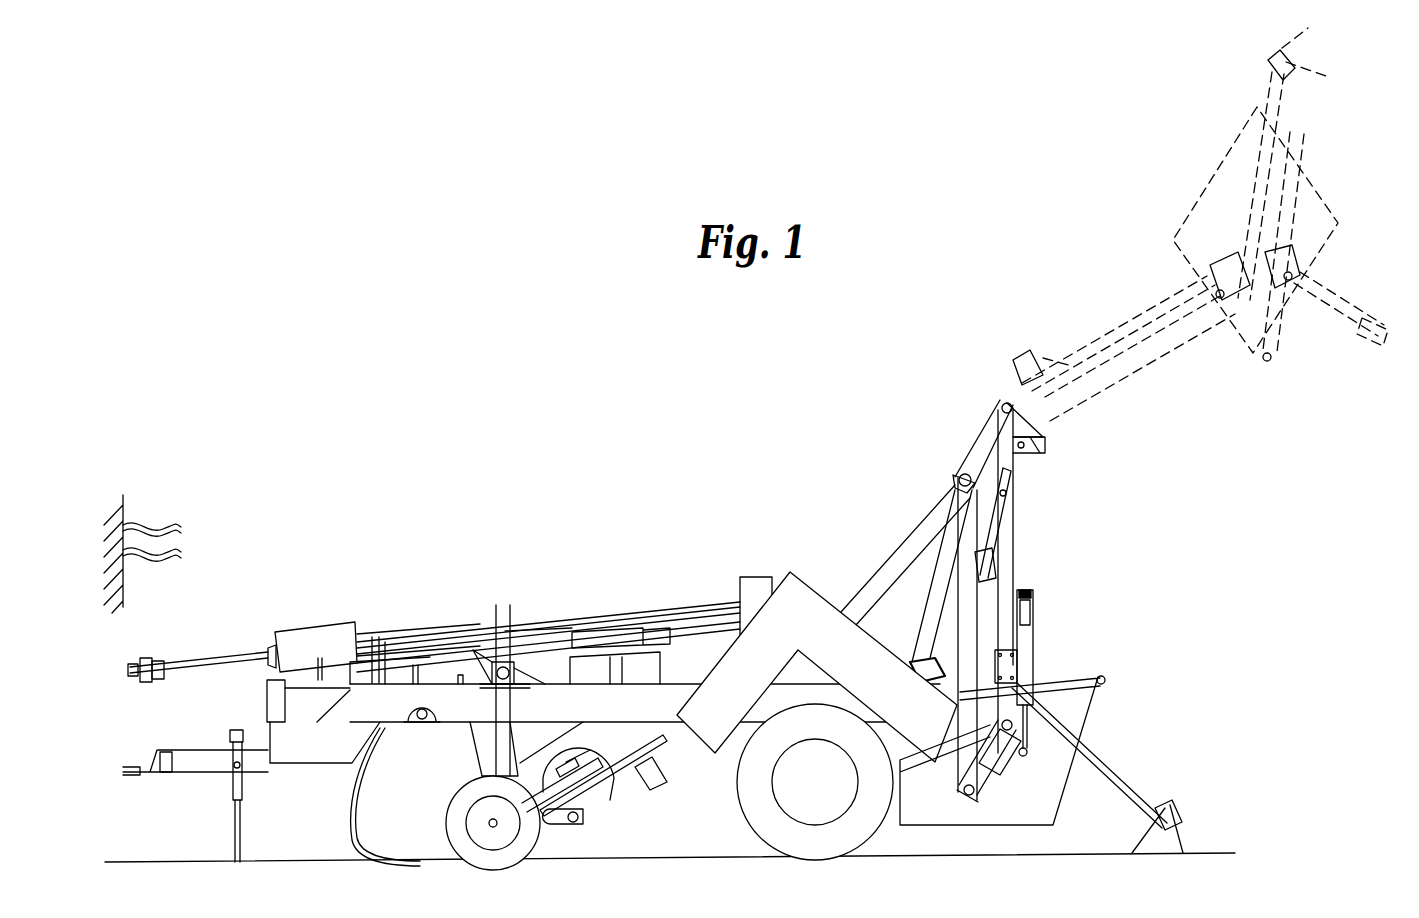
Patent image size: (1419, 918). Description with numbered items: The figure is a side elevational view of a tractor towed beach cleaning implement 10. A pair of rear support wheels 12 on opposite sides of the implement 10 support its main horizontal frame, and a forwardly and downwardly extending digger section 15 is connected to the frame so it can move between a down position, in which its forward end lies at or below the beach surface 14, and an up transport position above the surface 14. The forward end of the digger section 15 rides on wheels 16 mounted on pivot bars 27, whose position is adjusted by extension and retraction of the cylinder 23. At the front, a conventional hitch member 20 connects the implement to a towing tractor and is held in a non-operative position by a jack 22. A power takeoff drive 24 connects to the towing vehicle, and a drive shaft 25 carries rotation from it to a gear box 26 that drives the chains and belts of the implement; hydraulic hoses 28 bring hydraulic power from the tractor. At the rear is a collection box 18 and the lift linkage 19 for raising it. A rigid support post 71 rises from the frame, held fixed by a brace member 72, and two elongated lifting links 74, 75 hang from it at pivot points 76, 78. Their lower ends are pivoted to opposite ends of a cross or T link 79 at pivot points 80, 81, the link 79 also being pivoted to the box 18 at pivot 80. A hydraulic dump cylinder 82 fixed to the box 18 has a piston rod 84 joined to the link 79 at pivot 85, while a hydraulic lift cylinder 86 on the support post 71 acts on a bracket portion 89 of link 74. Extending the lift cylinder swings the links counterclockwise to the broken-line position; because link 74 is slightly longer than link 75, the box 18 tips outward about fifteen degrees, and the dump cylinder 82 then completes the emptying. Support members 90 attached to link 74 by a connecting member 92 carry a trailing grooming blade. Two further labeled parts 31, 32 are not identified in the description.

The implement 10 is at (540, 586).
The rear support wheels 12 is at (848, 830).
The beach surface 14 is at (705, 834).
The digger section 15 is at (638, 737).
The wheels 16 is at (510, 852).
The collection box 18 is at (980, 812).
The lift linkage 19 is at (938, 466).
The hitch member 20 is at (215, 760).
The jack 22 is at (240, 825).
The cylinder 23 is at (590, 777).
The power takeoff drive 24 is at (207, 662).
The drive shaft 25 is at (712, 603).
The gear box 26 is at (768, 577).
The pivot bars 27 is at (553, 826).
The hydraulic hoses 28 is at (160, 528).
The conveyor belt 31 is at (357, 848).
The curved link 32 is at (608, 802).
The rigid support post 71 is at (953, 578).
The brace member 72 is at (912, 533).
The lifting link 74 is at (1010, 505).
The lifting link 75 is at (978, 550).
The pivot point 76 is at (1004, 401).
The pivot point 78 is at (962, 472).
The cross link 79 is at (990, 768).
The pivot point 80 is at (1105, 683).
The pivot point 81 is at (963, 806).
The hydraulic dump cylinder 82 is at (1031, 650).
The piston rod 84 is at (1032, 690).
The pivot 85 is at (1028, 750).
The hydraulic lift cylinder 86 is at (995, 497).
The bracket portion 89 is at (1043, 447).
The support members 90 is at (1130, 795).
The connecting member 92 is at (1033, 620).